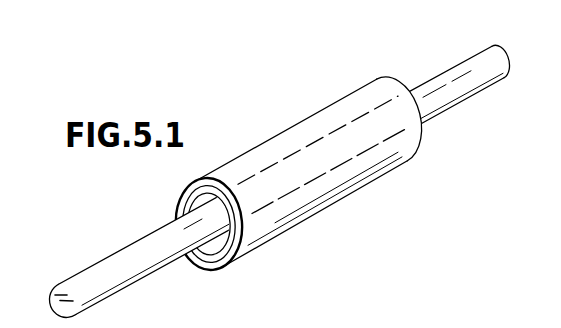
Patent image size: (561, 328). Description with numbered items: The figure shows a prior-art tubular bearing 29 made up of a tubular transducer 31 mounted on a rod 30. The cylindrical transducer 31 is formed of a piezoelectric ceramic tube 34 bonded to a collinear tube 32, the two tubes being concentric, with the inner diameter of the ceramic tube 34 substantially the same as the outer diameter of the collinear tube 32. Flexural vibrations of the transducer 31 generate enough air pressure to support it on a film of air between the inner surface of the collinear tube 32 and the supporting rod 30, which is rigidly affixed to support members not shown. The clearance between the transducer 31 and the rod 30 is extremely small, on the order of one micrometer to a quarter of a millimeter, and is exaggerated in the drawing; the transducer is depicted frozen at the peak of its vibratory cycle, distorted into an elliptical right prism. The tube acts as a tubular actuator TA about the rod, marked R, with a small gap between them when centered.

The tubular bearing 29 is at (278, 173).
The rod 30 is at (108, 259).
The tubular transducer 31 is at (182, 238).
The collinear tube 32 is at (197, 263).
The piezoelectric ceramic tube 34 is at (209, 262).
The rod R is at (278, 173).
The tubular actuator TA is at (348, 93).